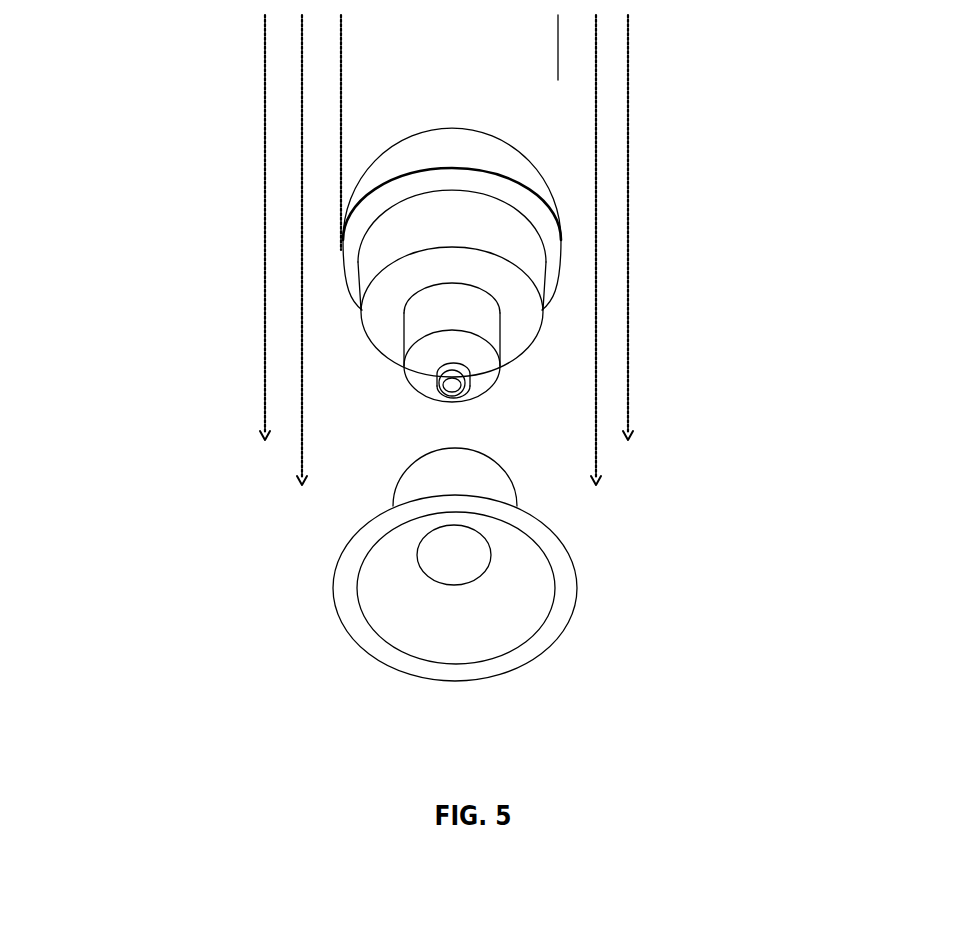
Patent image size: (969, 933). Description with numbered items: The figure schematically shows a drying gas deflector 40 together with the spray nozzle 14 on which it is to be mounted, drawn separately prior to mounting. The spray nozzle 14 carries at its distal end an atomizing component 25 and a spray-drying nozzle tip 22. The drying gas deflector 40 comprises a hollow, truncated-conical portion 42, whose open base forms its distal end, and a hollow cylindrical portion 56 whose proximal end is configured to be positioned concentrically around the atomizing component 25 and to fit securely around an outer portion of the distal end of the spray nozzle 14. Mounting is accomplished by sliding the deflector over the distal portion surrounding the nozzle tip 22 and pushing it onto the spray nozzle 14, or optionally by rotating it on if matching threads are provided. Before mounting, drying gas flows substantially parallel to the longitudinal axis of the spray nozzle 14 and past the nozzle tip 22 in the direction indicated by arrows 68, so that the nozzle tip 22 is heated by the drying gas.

The spray nozzle 14 is at (436, 78).
The arrows 68 is at (634, 170).
The atomizing component 25 is at (420, 323).
The spray-drying nozzle tip 22 is at (442, 388).
The drying gas deflector 40 is at (497, 564).
The hollow, truncated-conical portion 42 is at (322, 580).
The hollow cylindrical portion 56 is at (385, 497).